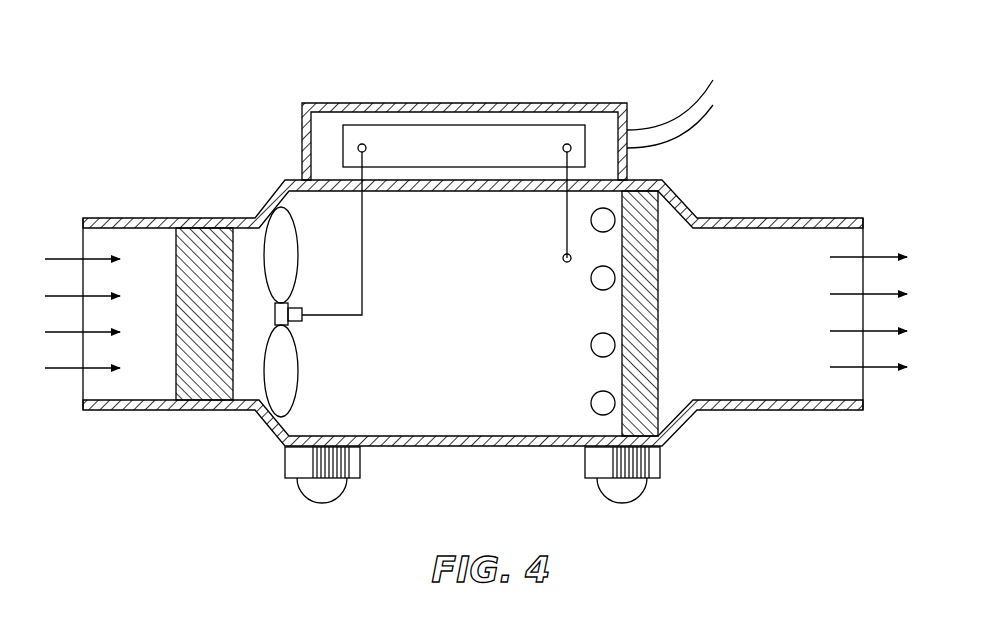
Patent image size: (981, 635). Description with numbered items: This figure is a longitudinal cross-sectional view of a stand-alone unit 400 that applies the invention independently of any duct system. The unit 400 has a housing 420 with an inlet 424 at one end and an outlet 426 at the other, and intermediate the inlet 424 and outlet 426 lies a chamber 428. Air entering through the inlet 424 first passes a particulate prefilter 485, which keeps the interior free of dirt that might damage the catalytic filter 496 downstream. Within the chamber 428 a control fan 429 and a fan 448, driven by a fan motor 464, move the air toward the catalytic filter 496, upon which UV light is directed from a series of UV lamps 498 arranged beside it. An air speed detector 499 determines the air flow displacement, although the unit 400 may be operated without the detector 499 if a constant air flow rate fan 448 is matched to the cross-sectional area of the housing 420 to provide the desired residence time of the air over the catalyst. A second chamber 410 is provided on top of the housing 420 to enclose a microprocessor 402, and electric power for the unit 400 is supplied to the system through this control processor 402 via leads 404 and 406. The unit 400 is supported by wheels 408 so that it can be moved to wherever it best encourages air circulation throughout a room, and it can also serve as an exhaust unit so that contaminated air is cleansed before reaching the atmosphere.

The stand-alone unit 400 is at (218, 436).
The microprocessor 402 is at (467, 133).
The lead 404 is at (678, 117).
The lead 406 is at (703, 118).
The wheels 408 is at (333, 488).
The second chamber 410 is at (343, 138).
The housing 420 is at (265, 197).
The inlet 424 is at (115, 218).
The outlet 426 is at (790, 213).
The chamber 428 is at (413, 398).
The control fan 429 is at (300, 363).
The fan 448 is at (298, 280).
The fan motor 464 is at (295, 317).
The particulate prefilter 485 is at (190, 240).
The catalytic filter 496 is at (658, 393).
The UV lamps 498 is at (614, 228).
The air speed detector 499 is at (568, 212).